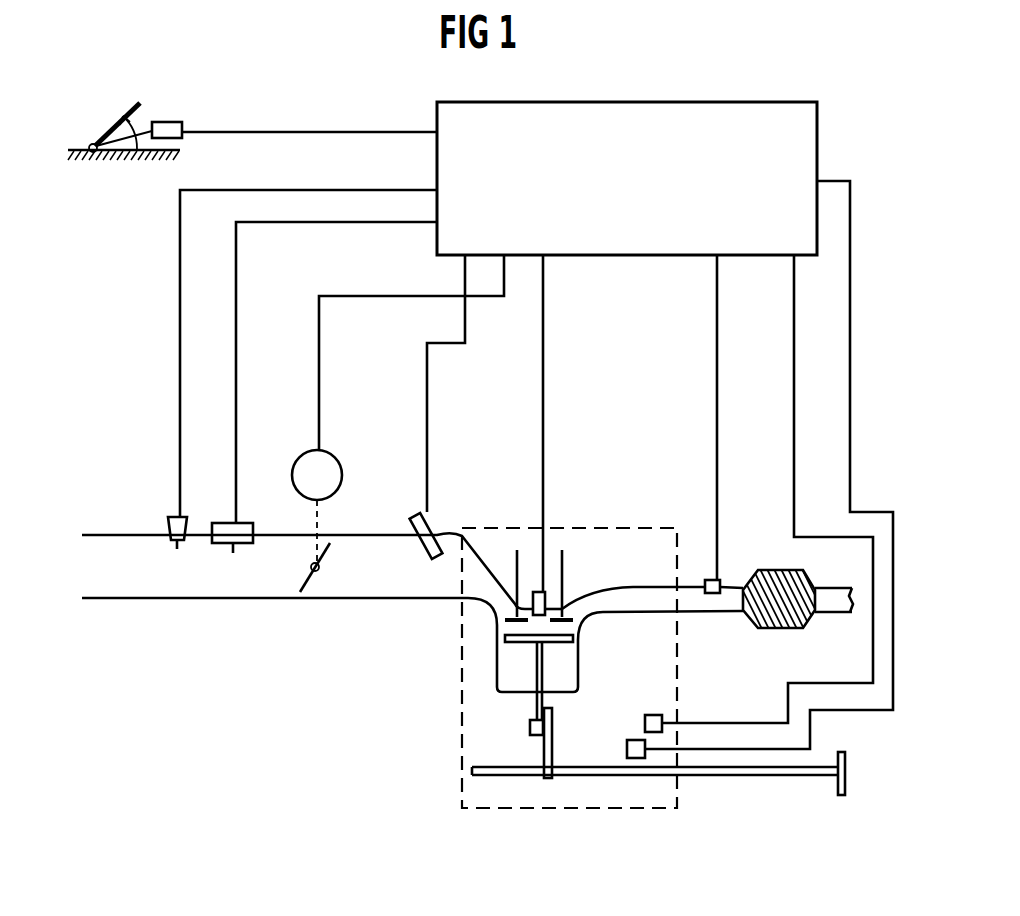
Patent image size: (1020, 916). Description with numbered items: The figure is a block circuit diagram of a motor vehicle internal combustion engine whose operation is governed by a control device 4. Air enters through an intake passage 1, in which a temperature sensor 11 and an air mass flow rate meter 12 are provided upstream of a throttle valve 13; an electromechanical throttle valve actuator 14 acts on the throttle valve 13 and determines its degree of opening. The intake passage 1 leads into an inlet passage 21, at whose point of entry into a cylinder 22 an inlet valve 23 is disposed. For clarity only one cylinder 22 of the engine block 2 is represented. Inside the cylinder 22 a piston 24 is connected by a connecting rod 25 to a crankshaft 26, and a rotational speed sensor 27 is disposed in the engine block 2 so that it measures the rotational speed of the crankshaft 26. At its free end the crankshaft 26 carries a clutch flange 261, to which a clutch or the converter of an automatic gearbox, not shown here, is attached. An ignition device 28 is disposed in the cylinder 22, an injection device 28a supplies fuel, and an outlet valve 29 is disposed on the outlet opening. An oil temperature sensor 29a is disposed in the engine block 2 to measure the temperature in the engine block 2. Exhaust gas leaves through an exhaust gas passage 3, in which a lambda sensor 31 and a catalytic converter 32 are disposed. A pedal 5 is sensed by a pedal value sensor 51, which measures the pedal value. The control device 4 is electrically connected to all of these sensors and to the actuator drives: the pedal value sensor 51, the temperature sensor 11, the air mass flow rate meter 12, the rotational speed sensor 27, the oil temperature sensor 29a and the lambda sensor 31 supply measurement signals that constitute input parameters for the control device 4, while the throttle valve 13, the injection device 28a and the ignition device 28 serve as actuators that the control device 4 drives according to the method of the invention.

The intake passage 1 is at (196, 582).
The engine block 2 is at (637, 528).
The exhaust gas passage 3 is at (710, 612).
The control device 4 is at (735, 103).
The pedal 5 is at (112, 128).
The temperature sensor 11 is at (168, 518).
The air mass flow rate meter 12 is at (246, 523).
The throttle valve 13 is at (305, 595).
The throttle valve actuator 14 is at (328, 454).
The inlet passage 21 is at (483, 598).
The cylinder 22 is at (510, 663).
The inlet valve 23 is at (517, 550).
The piston 24 is at (542, 666).
The connecting rod 25 is at (544, 745).
The crankshaft 26 is at (752, 780).
The clutch flange 261 is at (841, 797).
The rotational speed sensor 27 is at (628, 742).
The ignition device 28 is at (546, 590).
The injection device 28a is at (412, 515).
The outlet valve 29 is at (562, 577).
The oil temperature sensor 29a is at (663, 718).
The lambda sensor 31 is at (720, 578).
The catalytic converter 32 is at (767, 630).
The pedal value sensor 51 is at (168, 122).